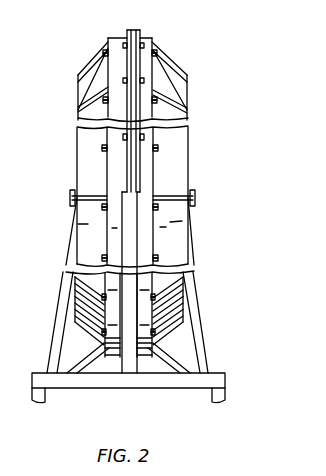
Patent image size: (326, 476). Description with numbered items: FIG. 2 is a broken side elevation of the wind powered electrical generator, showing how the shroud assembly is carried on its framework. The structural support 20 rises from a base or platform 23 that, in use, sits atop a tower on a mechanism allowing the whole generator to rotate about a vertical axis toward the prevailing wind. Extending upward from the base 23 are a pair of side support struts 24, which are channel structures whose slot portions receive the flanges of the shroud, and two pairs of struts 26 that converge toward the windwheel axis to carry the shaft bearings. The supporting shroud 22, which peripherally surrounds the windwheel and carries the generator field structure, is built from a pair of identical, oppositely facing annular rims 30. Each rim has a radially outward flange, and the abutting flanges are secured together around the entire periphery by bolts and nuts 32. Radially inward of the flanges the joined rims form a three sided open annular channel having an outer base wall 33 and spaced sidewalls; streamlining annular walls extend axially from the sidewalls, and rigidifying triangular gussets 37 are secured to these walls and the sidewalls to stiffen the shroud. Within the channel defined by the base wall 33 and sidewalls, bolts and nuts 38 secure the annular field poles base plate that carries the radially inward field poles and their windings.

The structural support 20 is at (78, 390).
The supporting shroud 22 is at (77, 88).
The base or platform 23 is at (218, 376).
The side support struts 24 is at (126, 368).
The struts 26 is at (62, 310).
The annular rims 30 is at (88, 147).
The bolts and nuts 32 is at (140, 33).
The outer base wall 33 is at (118, 43).
The rigidifying triangular gussets 37 is at (165, 73).
The bolts and nuts 38 is at (103, 208).